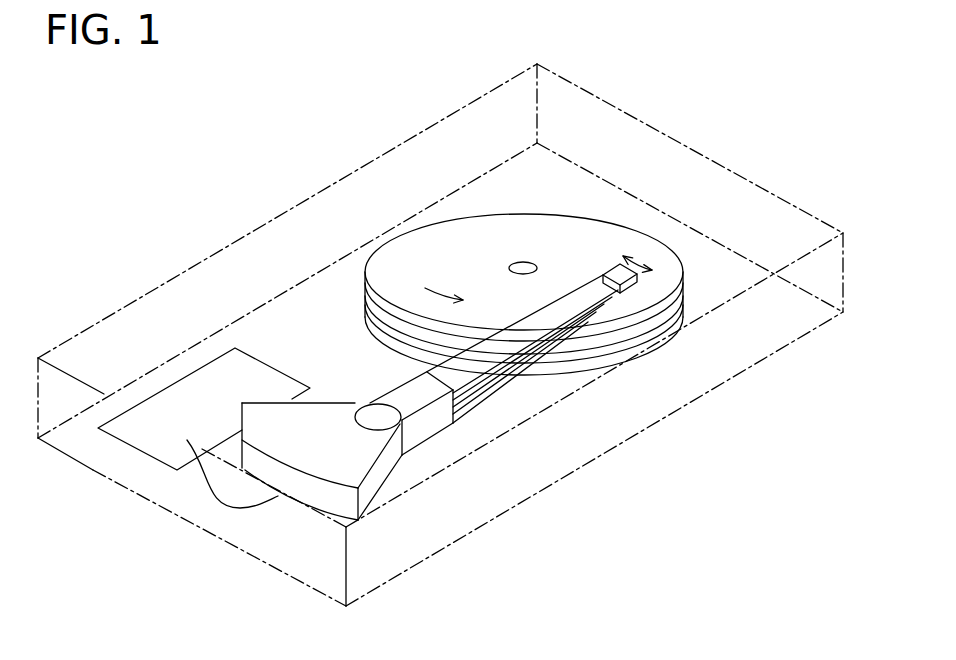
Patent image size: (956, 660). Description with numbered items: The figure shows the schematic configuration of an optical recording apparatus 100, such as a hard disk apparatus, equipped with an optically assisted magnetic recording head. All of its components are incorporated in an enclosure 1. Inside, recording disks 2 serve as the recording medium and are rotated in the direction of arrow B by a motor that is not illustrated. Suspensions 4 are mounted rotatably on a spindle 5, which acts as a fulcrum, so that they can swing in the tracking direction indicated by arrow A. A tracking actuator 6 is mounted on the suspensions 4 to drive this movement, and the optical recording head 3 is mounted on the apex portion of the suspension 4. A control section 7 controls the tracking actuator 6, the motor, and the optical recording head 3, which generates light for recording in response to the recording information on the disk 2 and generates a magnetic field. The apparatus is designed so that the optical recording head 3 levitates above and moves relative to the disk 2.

The optical recording apparatus 100 is at (248, 167).
The enclosure 1 is at (257, 233).
The recording disk 2 is at (680, 303).
The optical recording head 3 is at (634, 288).
The suspension 4 is at (503, 377).
The spindle 5 is at (385, 417).
The tracking actuator 6 is at (360, 480).
The control section 7 is at (137, 453).